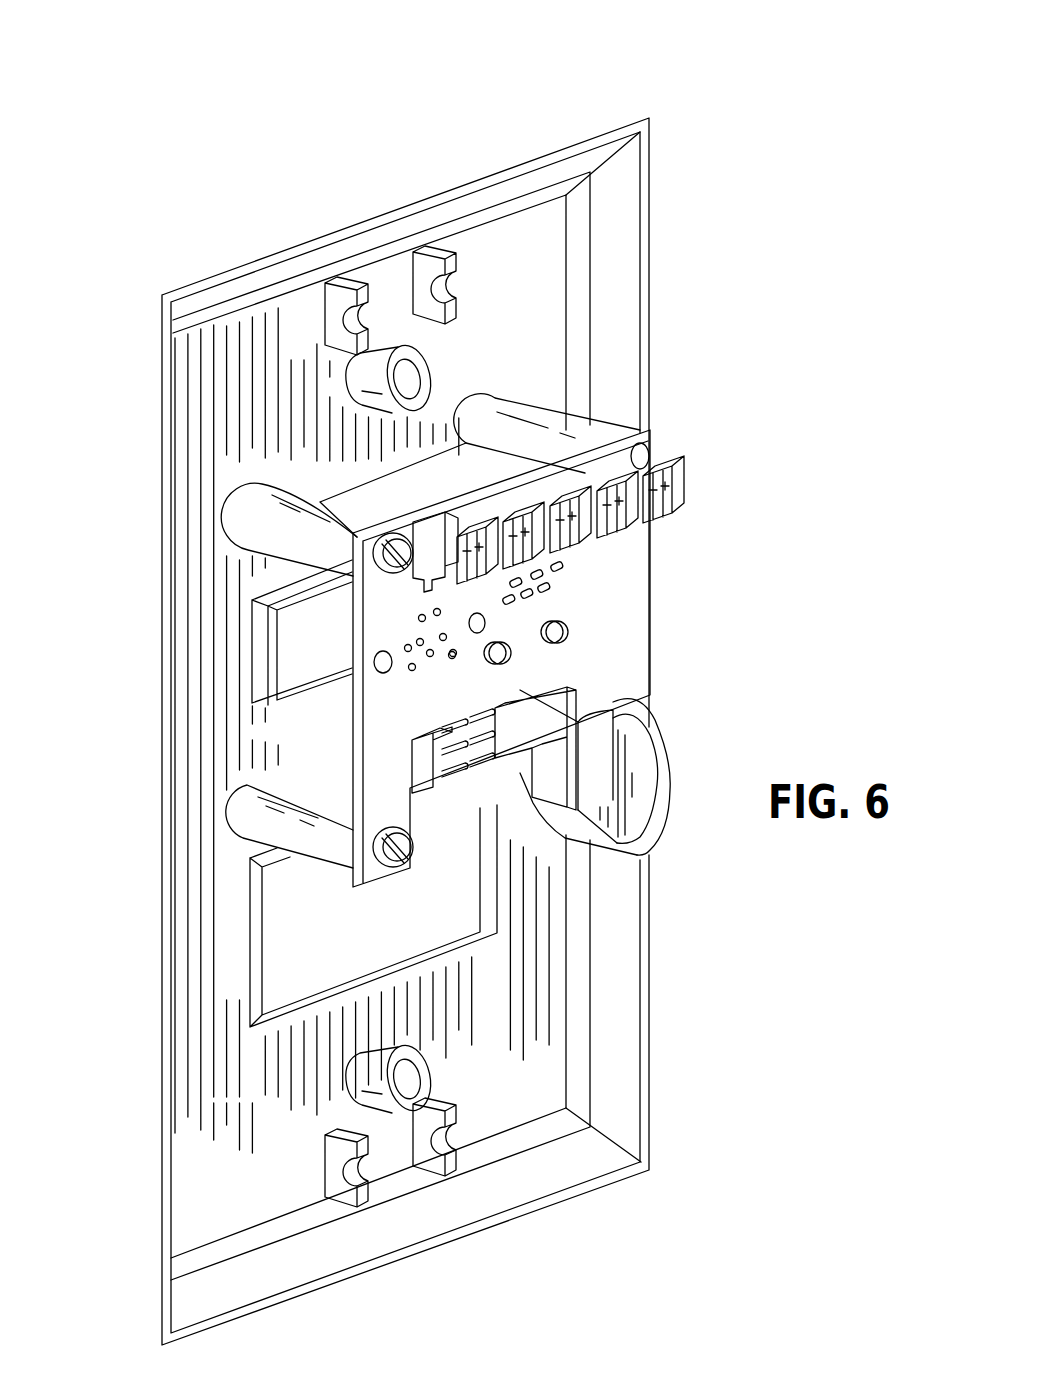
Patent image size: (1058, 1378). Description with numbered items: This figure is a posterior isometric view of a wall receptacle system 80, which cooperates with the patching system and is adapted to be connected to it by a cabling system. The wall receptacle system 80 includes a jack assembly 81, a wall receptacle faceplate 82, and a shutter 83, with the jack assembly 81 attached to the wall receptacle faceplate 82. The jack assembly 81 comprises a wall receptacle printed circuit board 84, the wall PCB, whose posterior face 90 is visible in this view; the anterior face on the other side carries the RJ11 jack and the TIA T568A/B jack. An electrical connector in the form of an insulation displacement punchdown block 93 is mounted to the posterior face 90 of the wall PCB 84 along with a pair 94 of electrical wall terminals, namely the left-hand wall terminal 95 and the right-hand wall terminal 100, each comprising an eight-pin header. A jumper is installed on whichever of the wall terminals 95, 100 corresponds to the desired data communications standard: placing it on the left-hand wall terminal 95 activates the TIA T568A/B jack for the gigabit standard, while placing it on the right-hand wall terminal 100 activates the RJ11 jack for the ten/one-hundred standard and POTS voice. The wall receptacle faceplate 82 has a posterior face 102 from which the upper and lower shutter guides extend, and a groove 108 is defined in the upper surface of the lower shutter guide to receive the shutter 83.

The wall receptacle system 80 is at (745, 318).
The jack assembly 81 is at (635, 550).
The wall receptacle faceplate 82 is at (500, 258).
The shutter 83 is at (645, 782).
The wall receptacle printed circuit board 84 is at (620, 637).
The posterior face 90 is at (617, 588).
The insulation displacement punchdown block 93 is at (583, 470).
The pair of electrical wall terminals 94 is at (500, 675).
The left-hand wall terminal 95 is at (400, 765).
The right-hand wall terminal 100 is at (565, 668).
The posterior face 102 is at (548, 248).
The groove 108 is at (410, 748).